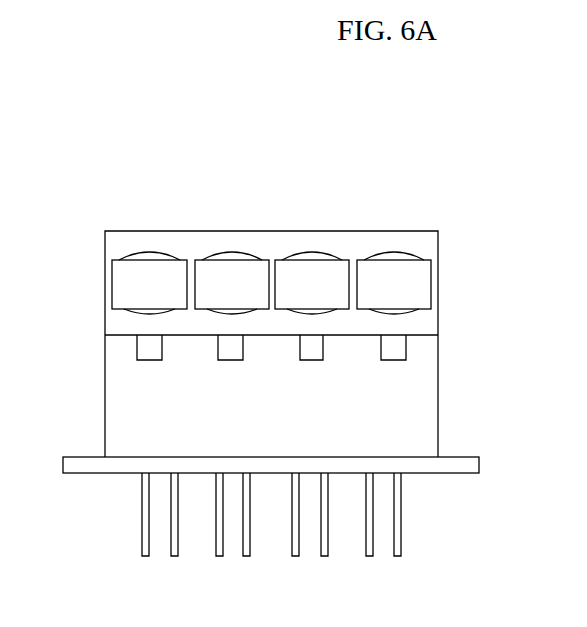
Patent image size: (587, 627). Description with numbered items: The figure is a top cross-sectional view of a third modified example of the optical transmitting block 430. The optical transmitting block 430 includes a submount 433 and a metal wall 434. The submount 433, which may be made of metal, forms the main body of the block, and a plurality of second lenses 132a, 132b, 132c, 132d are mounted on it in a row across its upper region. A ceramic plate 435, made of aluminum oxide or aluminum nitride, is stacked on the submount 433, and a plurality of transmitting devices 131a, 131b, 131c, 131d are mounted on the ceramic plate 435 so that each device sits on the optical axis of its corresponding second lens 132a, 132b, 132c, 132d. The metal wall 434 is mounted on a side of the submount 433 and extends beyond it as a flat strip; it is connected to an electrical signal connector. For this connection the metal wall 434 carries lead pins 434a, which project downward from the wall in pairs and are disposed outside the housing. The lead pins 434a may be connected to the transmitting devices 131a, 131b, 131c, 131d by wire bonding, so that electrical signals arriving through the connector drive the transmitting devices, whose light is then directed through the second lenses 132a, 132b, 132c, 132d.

The optical transmitting block 430 is at (65, 202).
The submount 433 is at (438, 239).
The ceramic plate 435 is at (438, 414).
The metal wall 434 is at (480, 467).
The lead pins 434a is at (401, 535).
The second lens 132a is at (145, 268).
The second lens 132b is at (225, 268).
The second lens 132c is at (306, 268).
The second lens 132d is at (390, 268).
The transmitting device 131a is at (143, 352).
The transmitting device 131b is at (222, 338).
The transmitting device 131c is at (320, 338).
The transmitting device 131d is at (398, 353).